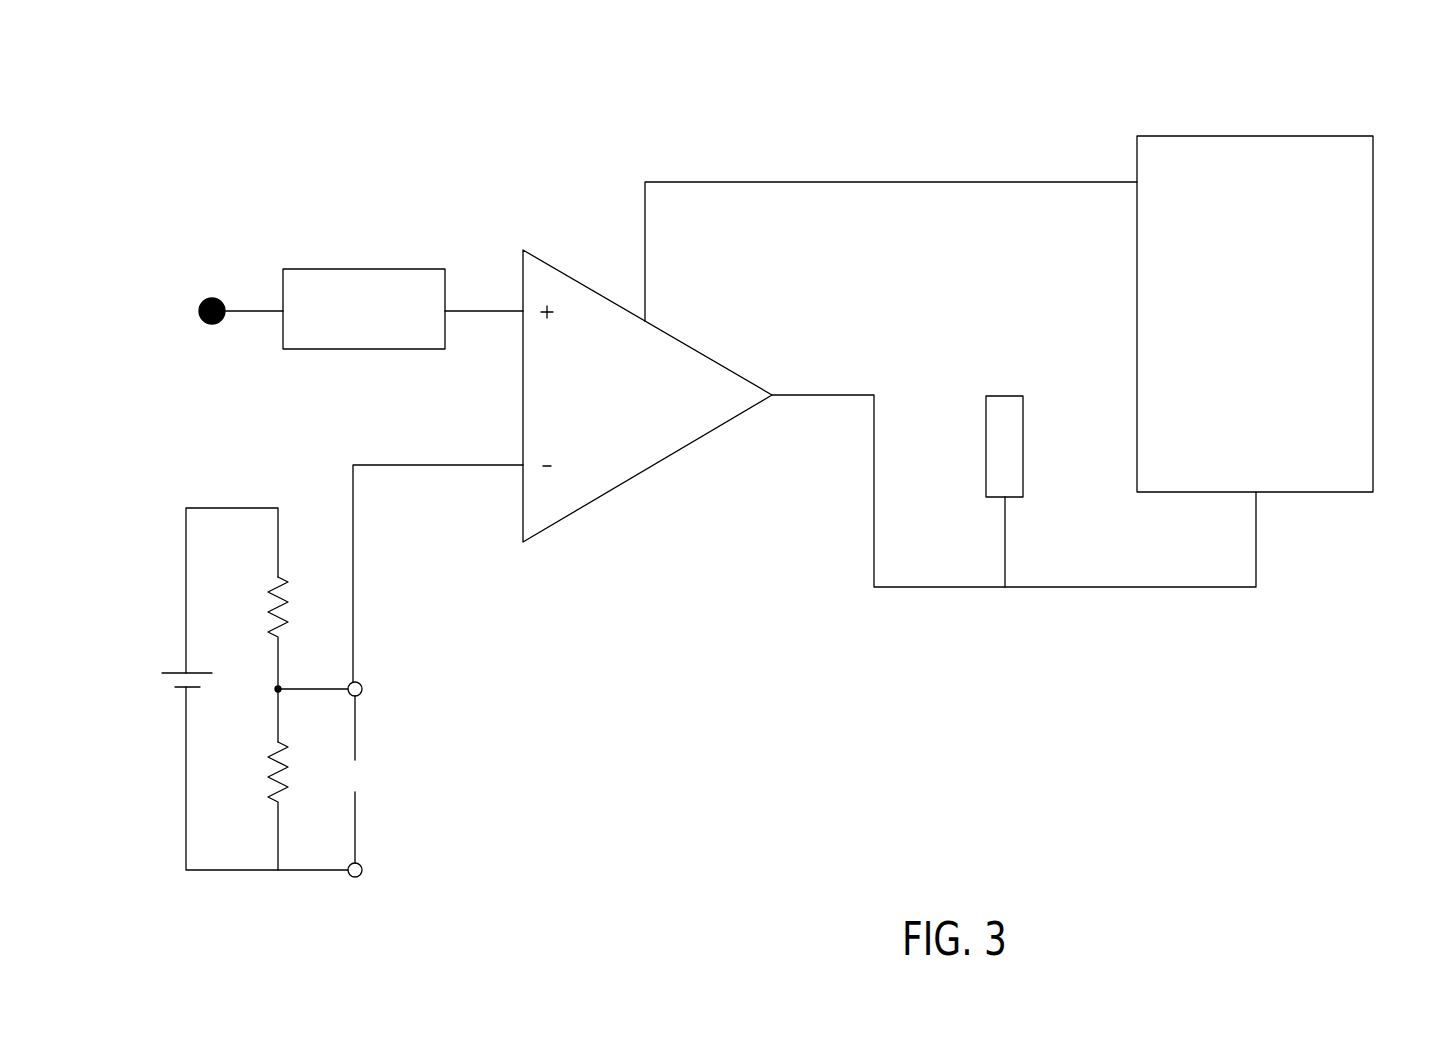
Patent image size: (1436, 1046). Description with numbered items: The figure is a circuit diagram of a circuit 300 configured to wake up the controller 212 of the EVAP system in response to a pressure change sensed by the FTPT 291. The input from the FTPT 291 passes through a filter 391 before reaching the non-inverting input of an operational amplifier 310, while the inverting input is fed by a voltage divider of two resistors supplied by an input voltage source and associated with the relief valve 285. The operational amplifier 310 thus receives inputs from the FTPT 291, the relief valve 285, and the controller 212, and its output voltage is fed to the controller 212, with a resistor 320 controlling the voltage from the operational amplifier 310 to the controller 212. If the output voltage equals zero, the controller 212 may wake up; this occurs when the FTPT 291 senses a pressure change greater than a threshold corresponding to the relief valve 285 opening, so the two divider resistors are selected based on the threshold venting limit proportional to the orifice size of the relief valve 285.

The circuit 300 is at (1361, 72).
The FTPT 291 is at (205, 297).
The filter 391 is at (355, 265).
The operational amplifier 310 is at (540, 262).
The resistor 320 is at (987, 395).
The controller 212 is at (1210, 135).
The relief valve 285 is at (130, 496).